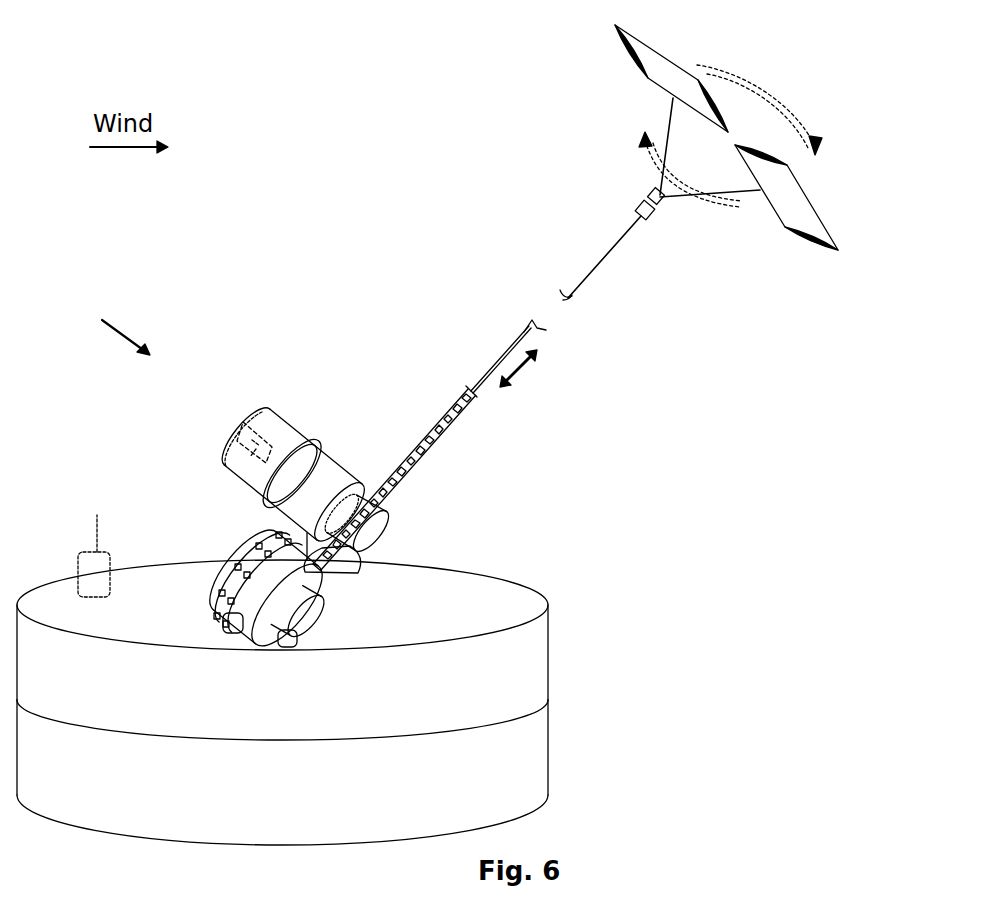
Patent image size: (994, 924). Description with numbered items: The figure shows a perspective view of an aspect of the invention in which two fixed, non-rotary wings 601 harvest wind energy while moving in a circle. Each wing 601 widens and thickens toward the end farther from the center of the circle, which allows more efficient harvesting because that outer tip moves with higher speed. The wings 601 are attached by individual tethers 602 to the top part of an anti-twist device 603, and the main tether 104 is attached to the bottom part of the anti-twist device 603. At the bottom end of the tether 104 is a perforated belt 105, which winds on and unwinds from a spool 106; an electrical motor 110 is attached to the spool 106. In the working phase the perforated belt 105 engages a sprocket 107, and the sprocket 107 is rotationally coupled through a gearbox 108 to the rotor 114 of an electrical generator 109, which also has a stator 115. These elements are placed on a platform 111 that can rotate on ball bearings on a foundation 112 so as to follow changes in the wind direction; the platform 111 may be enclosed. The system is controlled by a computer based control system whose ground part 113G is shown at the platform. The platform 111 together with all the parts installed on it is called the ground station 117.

The wing 601 is at (658, 62).
The tether 602 is at (670, 127).
The anti-twist device 603 is at (648, 200).
The tether 104 is at (593, 273).
The perforated belt 105 is at (460, 403).
The spool 106 is at (245, 543).
The sprocket 107 is at (388, 532).
The gearbox 108 is at (338, 470).
The electrical generator 109 is at (255, 468).
The electrical motor 110 is at (325, 607).
The platform 111 is at (535, 640).
The foundation 112 is at (537, 718).
The ground part of control system 113G is at (100, 580).
The rotor 114 is at (252, 417).
The stator 115 is at (238, 427).
The ground station 117 is at (109, 321).